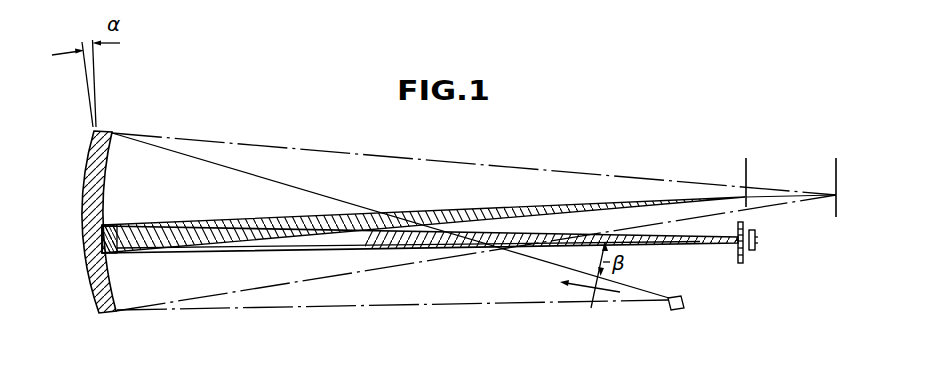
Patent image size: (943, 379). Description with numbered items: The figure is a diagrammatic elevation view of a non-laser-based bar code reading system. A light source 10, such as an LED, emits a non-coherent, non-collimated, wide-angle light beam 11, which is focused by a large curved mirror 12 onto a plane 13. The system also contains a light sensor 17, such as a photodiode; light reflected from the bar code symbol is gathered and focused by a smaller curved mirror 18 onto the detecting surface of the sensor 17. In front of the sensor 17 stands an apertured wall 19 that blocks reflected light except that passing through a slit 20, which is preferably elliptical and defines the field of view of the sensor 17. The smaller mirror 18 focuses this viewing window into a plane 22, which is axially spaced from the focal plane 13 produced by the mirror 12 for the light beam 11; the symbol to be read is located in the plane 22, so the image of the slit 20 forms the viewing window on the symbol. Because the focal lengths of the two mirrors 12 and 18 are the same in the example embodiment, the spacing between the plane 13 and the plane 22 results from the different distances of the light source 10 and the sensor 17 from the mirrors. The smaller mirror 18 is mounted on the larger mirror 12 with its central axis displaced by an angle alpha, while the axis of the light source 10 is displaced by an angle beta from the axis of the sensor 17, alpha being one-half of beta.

The light source 10 is at (675, 310).
The light beam 11 is at (591, 308).
The curved mirror 12 is at (116, 153).
The plane 13 is at (835, 168).
The light sensor 17 is at (755, 248).
The smaller curved mirror 18 is at (118, 240).
The apertured wall 19 is at (743, 253).
The slit 20 is at (735, 243).
The plane 22 is at (746, 168).